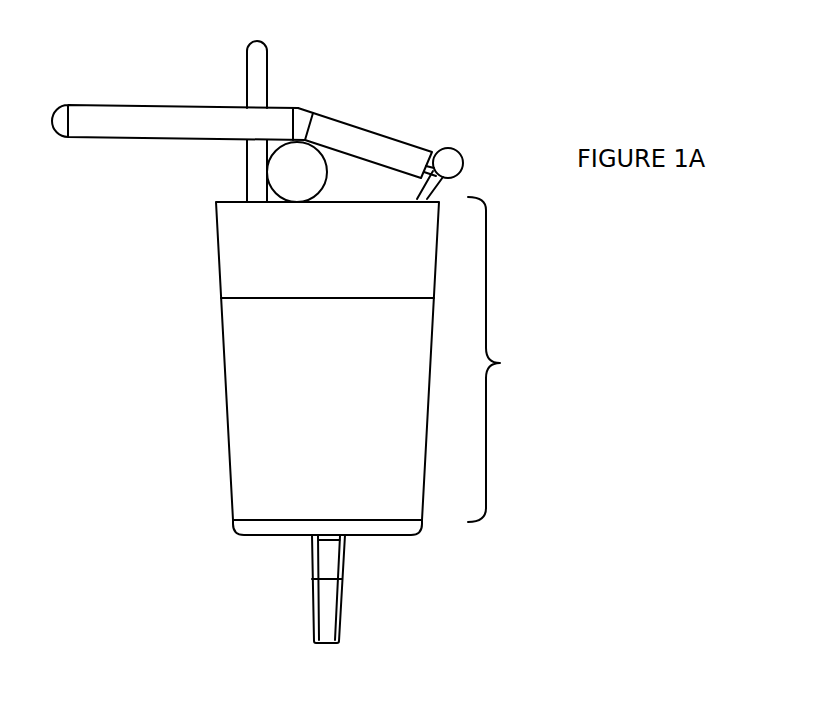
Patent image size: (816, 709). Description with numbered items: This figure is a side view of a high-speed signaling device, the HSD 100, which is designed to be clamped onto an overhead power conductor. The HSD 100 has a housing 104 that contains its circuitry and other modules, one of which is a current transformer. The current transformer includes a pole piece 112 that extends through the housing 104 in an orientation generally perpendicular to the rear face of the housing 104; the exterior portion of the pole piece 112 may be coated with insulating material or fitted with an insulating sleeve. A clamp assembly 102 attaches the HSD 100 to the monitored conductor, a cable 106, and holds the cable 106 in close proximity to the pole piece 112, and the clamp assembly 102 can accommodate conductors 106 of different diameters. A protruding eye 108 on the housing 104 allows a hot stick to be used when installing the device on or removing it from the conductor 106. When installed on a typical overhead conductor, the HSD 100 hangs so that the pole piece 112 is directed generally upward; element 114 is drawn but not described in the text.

The high-speed signaling device 100 is at (228, 462).
The clamp assembly 102 is at (188, 107).
The housing 104 is at (504, 359).
The conductor 106 is at (332, 167).
The protruding eye 108 is at (342, 633).
The pole piece 112 is at (248, 53).
The ball pivot 114 is at (448, 147).